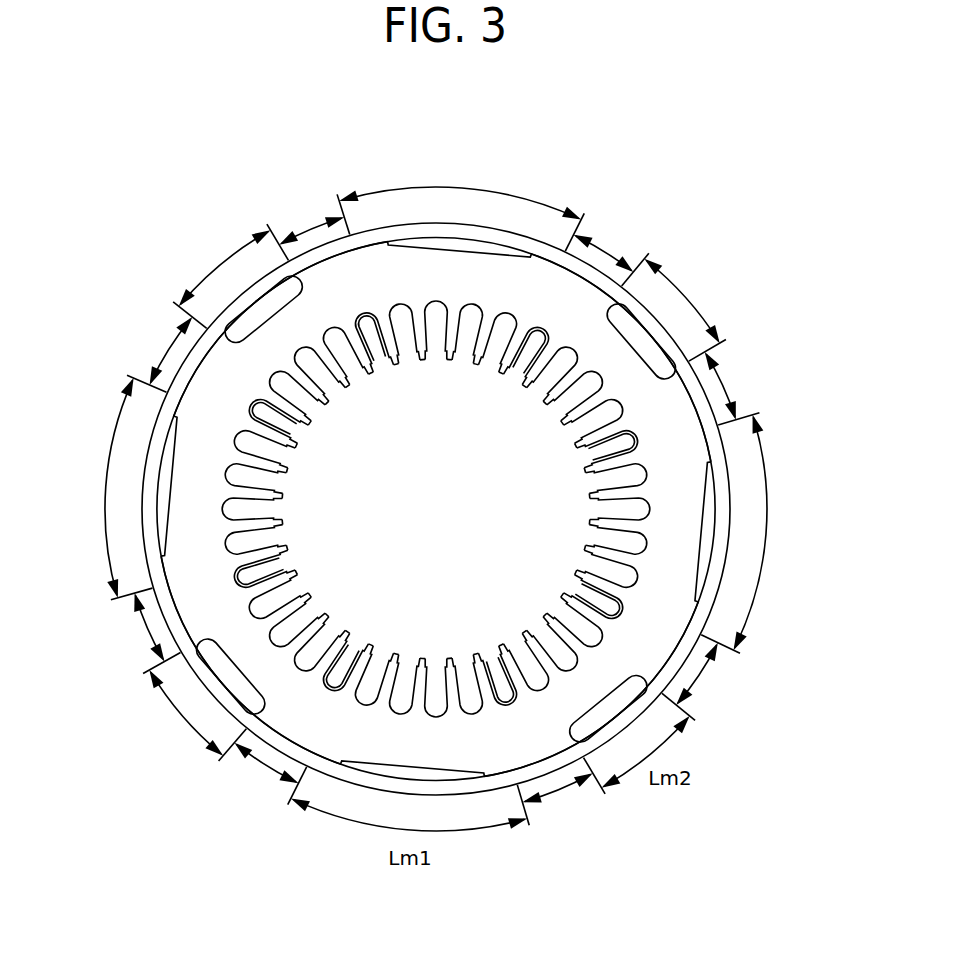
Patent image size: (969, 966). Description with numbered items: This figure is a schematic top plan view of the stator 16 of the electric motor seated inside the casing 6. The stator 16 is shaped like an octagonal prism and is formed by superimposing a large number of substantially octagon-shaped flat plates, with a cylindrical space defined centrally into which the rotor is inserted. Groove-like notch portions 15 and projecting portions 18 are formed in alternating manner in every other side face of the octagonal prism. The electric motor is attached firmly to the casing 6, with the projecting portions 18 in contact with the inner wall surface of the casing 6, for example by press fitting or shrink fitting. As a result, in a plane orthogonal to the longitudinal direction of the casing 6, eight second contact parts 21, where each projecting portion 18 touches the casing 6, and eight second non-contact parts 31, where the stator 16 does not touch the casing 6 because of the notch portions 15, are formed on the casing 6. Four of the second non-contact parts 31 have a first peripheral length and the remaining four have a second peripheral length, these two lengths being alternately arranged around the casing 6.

The casing 6 is at (453, 237).
The notch portion 15 is at (272, 318).
The stator 16 is at (318, 396).
The projecting portion 18 is at (341, 268).
The second contact part 21 is at (314, 228).
The second non-contact part 31 is at (452, 186).